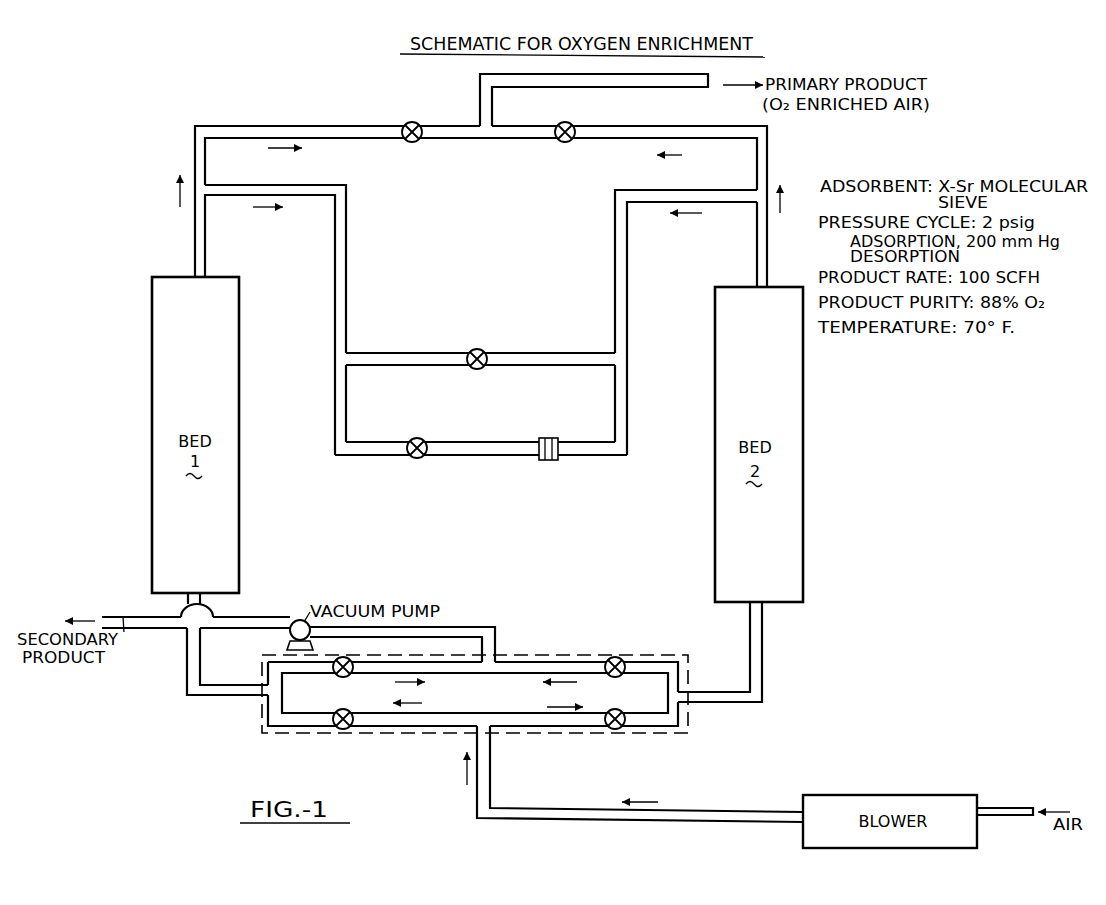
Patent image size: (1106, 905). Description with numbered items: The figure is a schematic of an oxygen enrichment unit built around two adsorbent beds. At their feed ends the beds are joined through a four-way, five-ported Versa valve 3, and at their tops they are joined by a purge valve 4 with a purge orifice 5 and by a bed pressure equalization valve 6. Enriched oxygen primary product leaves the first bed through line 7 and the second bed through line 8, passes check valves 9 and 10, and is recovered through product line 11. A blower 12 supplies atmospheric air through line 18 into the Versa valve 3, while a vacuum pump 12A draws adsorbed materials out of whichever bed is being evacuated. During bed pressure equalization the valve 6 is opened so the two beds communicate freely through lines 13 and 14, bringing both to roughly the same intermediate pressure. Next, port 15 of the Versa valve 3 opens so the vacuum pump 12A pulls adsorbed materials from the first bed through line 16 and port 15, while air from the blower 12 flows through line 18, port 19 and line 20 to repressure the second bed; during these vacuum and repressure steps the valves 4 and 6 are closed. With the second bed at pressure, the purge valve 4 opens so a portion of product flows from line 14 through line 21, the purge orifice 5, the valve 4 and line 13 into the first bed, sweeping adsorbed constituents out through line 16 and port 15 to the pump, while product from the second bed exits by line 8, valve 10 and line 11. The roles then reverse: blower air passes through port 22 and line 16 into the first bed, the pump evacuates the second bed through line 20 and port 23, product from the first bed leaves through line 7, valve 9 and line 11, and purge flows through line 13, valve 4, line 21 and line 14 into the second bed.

The Versa valve 3 is at (411, 733).
The purge valve 4 is at (416, 438).
The purge orifice 5 is at (548, 461).
The bed pressure equalization valve 6 is at (480, 339).
The line 7 is at (357, 139).
The line 8 is at (672, 118).
The check valve 9 is at (413, 142).
The check valve 10 is at (566, 117).
The product line 11 is at (492, 102).
The blower 12 is at (875, 794).
The vacuum pump 12A is at (287, 646).
The line 13 is at (346, 228).
The line 14 is at (615, 236).
The port 15 is at (346, 677).
The line 16 is at (237, 688).
The line 18 is at (566, 809).
The port 19 is at (625, 704).
The line 20 is at (762, 660).
The line 21 is at (627, 398).
The port 22 is at (349, 711).
The port 23 is at (617, 677).